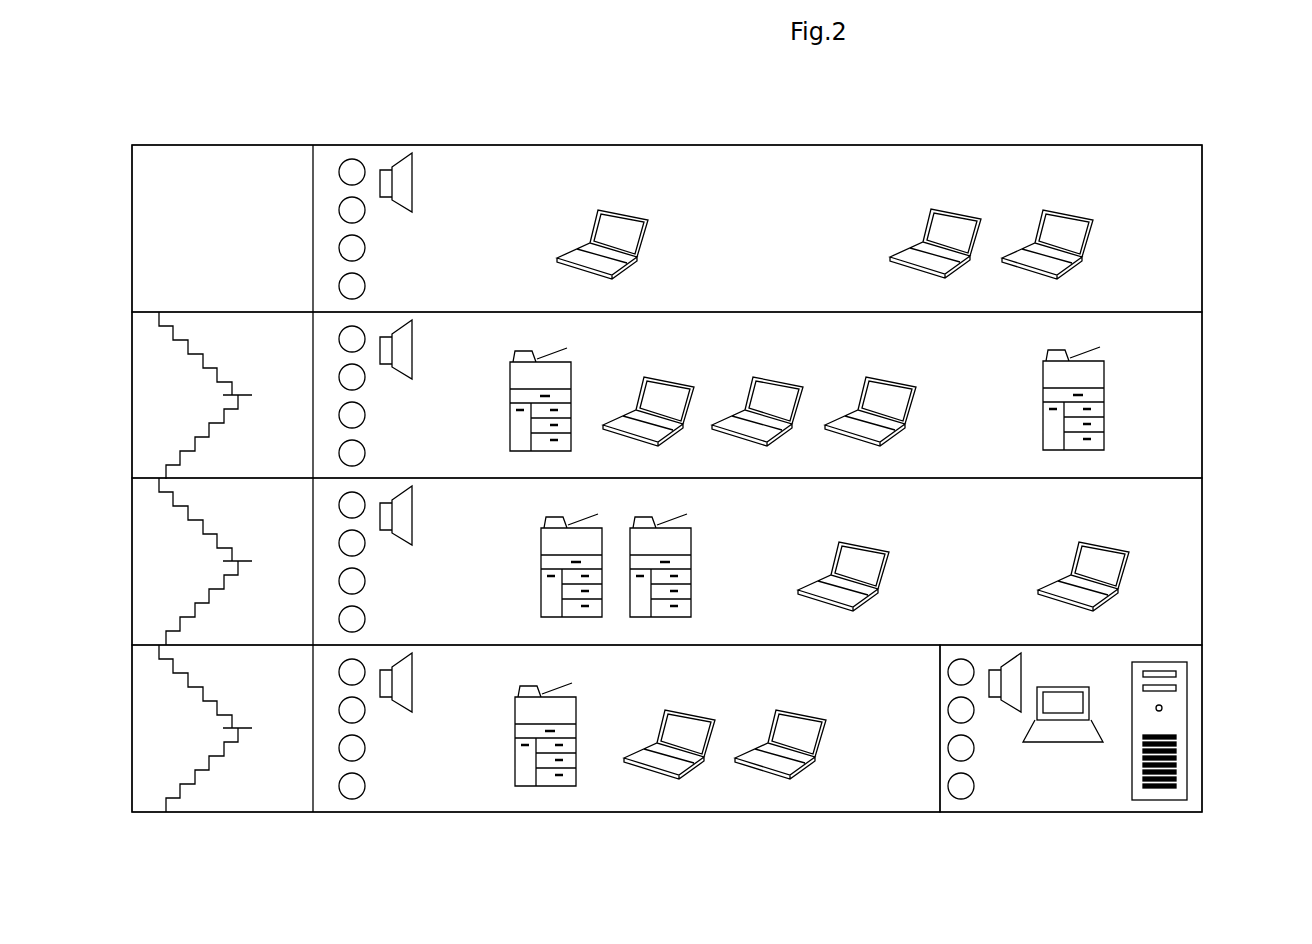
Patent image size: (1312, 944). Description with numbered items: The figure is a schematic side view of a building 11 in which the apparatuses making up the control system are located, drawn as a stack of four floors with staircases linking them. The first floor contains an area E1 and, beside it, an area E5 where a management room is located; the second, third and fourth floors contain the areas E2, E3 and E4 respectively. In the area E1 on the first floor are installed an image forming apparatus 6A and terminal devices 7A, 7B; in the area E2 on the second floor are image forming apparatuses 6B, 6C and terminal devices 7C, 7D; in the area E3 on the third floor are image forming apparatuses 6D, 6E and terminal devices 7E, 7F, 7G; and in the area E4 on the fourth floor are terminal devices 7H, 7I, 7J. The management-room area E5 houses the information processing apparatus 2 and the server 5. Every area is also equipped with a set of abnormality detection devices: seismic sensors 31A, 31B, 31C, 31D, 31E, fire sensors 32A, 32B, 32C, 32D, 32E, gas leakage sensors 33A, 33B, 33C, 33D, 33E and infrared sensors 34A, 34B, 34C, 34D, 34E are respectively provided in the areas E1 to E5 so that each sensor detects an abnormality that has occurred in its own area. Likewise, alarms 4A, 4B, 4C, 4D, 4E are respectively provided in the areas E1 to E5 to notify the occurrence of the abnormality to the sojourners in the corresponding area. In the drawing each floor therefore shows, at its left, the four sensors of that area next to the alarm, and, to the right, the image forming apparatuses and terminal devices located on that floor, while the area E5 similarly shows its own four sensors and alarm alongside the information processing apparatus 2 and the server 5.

The building 11 is at (678, 812).
The area E1 is at (445, 780).
The area E2 is at (1158, 534).
The area E3 is at (1158, 367).
The area E4 is at (1158, 202).
The area E5 is at (1100, 780).
The information processing apparatus 2 is at (1073, 745).
The server 5 is at (1132, 677).
The alarm 4A is at (403, 655).
The alarm 4B is at (403, 488).
The alarm 4C is at (403, 322).
The alarm 4D is at (403, 155).
The alarm 4E is at (1010, 655).
The seismic sensor 31A is at (339, 672).
The fire sensor 32A is at (339, 710).
The gas leakage sensor 33A is at (339, 748).
The infrared sensor 34A is at (339, 786).
The seismic sensor 31B is at (339, 505).
The fire sensor 32B is at (339, 543).
The gas leakage sensor 33B is at (339, 581).
The infrared sensor 34B is at (339, 619).
The seismic sensor 31C is at (339, 339).
The fire sensor 32C is at (339, 377).
The gas leakage sensor 33C is at (339, 415).
The infrared sensor 34C is at (339, 453).
The seismic sensor 31D is at (339, 172).
The fire sensor 32D is at (339, 210).
The gas leakage sensor 33D is at (339, 248).
The infrared sensor 34D is at (339, 286).
The seismic sensor 31E is at (948, 672).
The fire sensor 32E is at (948, 710).
The gas leakage sensor 33E is at (948, 748).
The infrared sensor 34E is at (948, 786).
The image forming apparatus 6A is at (515, 747).
The image forming apparatus 6B is at (541, 578).
The image forming apparatus 6C is at (691, 574).
The image forming apparatus 6D is at (510, 412).
The image forming apparatus 6E is at (1104, 407).
The terminal device 7A is at (703, 716).
The terminal device 7B is at (814, 716).
The terminal device 7C is at (877, 548).
The terminal device 7D is at (1117, 548).
The terminal device 7E is at (682, 383).
The terminal device 7F is at (791, 383).
The terminal device 7G is at (904, 383).
The terminal device 7H is at (636, 216).
The terminal device 7I is at (969, 215).
The terminal device 7J is at (1081, 216).